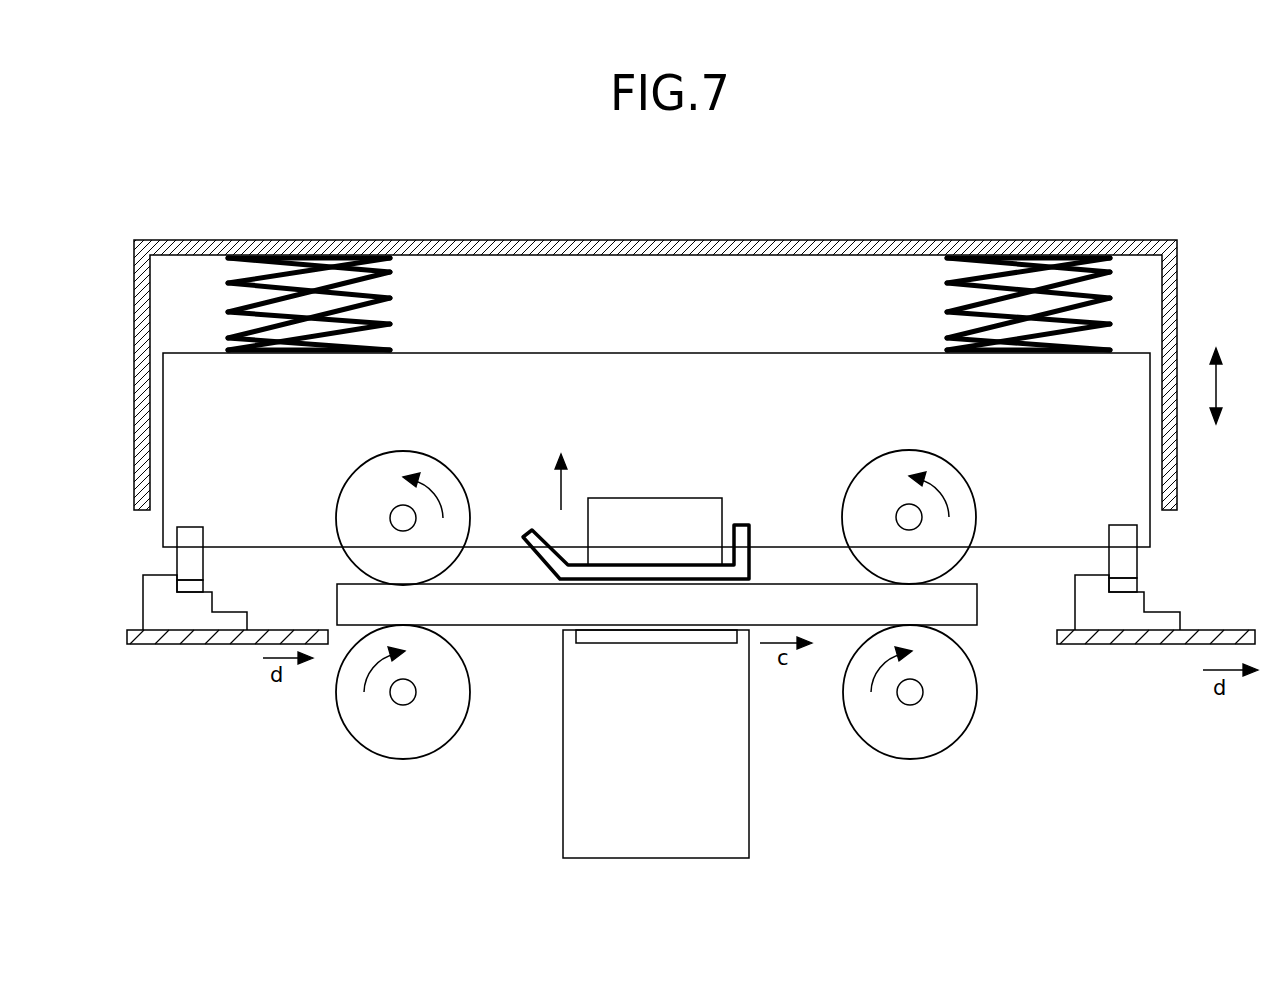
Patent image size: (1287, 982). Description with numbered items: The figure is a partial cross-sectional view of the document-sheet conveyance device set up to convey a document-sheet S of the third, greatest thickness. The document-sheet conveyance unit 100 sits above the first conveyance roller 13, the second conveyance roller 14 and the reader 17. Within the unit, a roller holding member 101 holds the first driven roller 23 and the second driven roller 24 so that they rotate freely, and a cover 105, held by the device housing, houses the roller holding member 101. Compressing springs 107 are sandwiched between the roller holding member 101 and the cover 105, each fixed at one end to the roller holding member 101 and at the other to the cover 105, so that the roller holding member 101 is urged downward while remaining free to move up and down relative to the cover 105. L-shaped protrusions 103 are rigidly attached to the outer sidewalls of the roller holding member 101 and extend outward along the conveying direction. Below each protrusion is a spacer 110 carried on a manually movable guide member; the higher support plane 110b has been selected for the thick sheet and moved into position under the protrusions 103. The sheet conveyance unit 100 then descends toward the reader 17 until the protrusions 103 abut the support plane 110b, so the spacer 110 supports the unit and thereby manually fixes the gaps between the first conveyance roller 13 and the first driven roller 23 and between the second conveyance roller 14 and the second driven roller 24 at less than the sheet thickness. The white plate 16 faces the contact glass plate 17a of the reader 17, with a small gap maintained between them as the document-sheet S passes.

The document-sheet conveyance unit 100 is at (1118, 214).
The cover 105 is at (688, 240).
The compressing springs 107 is at (368, 292).
The roller holding member 101 is at (737, 367).
The first driven roller 23 is at (387, 462).
The second driven roller 24 is at (962, 488).
The white plate 16 is at (676, 562).
The document-sheet S is at (492, 625).
The reader 17 is at (743, 813).
The contact glass plate 17a is at (647, 633).
The protrusions 103 is at (198, 562).
The spacer 110 is at (152, 607).
The support plane 110b is at (195, 592).
The first conveyance roller 13 is at (406, 753).
The second conveyance roller 14 is at (914, 752).